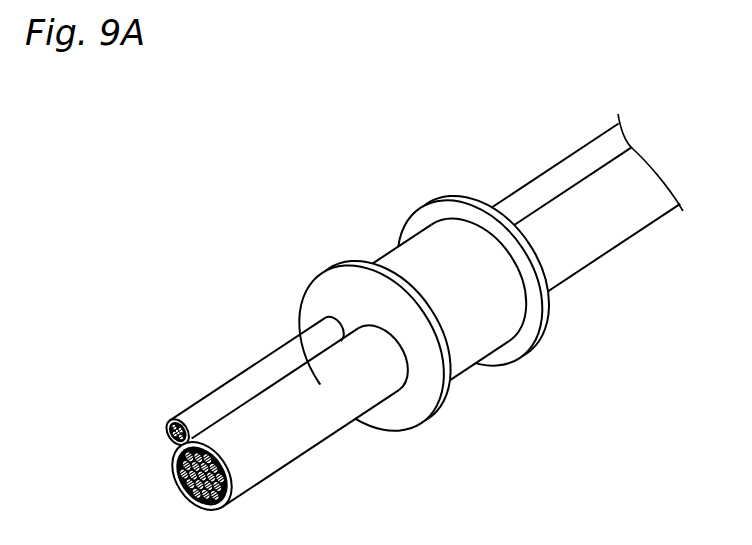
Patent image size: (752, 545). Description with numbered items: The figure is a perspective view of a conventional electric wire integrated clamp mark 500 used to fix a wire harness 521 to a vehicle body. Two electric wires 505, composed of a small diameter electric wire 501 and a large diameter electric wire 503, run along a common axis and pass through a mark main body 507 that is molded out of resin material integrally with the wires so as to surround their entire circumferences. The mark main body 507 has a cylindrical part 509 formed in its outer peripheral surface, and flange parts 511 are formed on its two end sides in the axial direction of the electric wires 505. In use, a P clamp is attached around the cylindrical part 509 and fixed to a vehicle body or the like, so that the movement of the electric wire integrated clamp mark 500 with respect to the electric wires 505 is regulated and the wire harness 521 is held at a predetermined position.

The wire harness 521 is at (555, 61).
The electric wire integrated clamp mark 500 is at (455, 192).
The electric wires 505 is at (577, 103).
The small diameter electric wire 501 is at (537, 193).
The large diameter electric wire 503 is at (585, 197).
The mark main body 507 is at (386, 253).
The cylindrical part 509 is at (483, 322).
The flange parts 511 is at (544, 328).